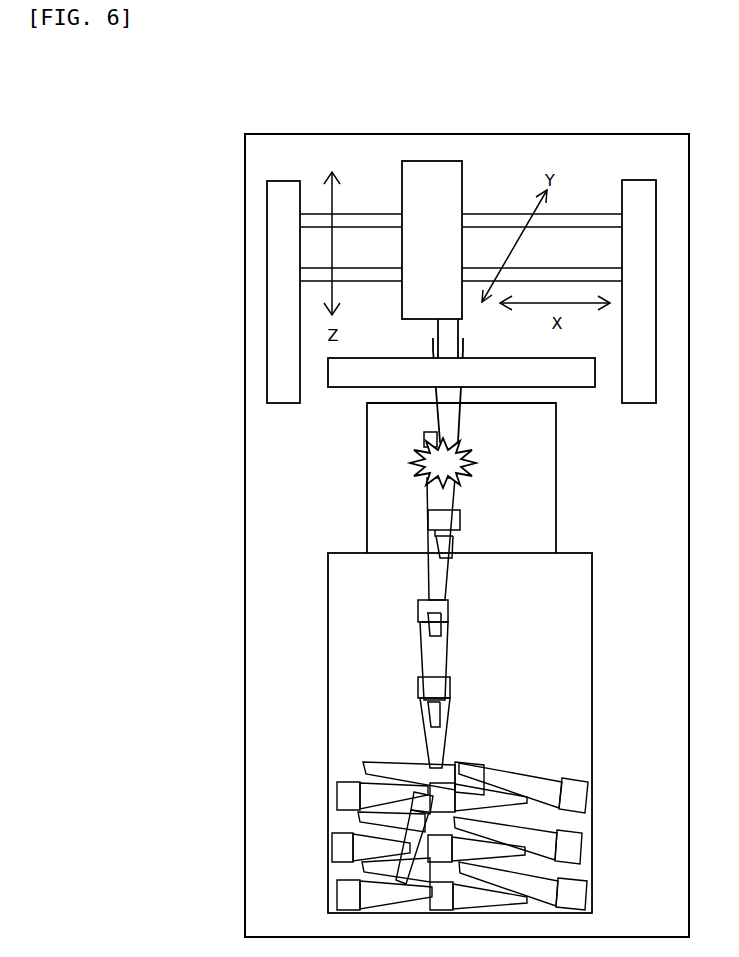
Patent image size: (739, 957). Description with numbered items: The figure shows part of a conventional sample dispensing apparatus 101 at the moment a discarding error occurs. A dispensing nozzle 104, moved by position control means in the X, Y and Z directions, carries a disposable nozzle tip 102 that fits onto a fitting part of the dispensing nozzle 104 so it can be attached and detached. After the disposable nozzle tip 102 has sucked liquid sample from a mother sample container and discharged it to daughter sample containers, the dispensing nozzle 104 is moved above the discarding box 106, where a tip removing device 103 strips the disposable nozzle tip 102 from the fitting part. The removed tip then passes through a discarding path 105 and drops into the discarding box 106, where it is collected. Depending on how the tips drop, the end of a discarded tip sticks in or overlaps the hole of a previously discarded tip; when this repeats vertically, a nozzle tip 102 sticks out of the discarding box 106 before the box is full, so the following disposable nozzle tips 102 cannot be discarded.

The sample dispensing apparatus 101 is at (290, 135).
The disposable nozzle tip 102 is at (445, 415).
The tip removing device 103 is at (560, 375).
The dispensing nozzle 104 is at (432, 167).
The discarding path 105 is at (393, 517).
The discarding box 106 is at (578, 657).